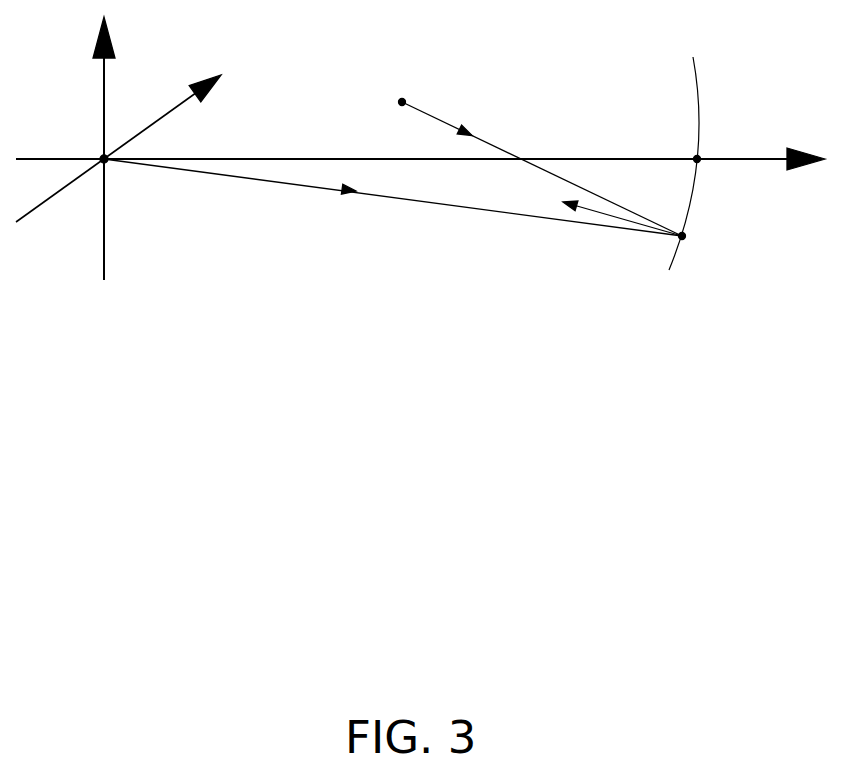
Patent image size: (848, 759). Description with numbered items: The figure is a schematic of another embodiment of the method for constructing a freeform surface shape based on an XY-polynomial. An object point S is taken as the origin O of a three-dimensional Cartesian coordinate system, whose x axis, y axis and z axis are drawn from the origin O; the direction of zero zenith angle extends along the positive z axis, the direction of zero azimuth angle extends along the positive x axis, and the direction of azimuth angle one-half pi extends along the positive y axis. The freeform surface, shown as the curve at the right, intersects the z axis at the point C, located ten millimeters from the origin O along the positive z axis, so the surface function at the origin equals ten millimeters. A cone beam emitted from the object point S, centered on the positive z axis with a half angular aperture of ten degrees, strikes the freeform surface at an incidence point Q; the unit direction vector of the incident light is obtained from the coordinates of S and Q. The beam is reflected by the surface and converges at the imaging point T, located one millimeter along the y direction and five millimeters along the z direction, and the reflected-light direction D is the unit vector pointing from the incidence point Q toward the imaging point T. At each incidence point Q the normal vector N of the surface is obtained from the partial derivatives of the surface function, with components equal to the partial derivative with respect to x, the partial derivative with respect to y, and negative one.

The x axis x is at (127, 147).
The y axis y is at (112, 148).
The z axis z is at (420, 170).
The origin O is at (77, 148).
The object point S is at (733, 155).
The intersection point C is at (705, 152).
The incidence point Q is at (692, 242).
The imaging point T is at (356, 205).
The vector delta D is at (475, 96).
The normal vector N is at (557, 188).